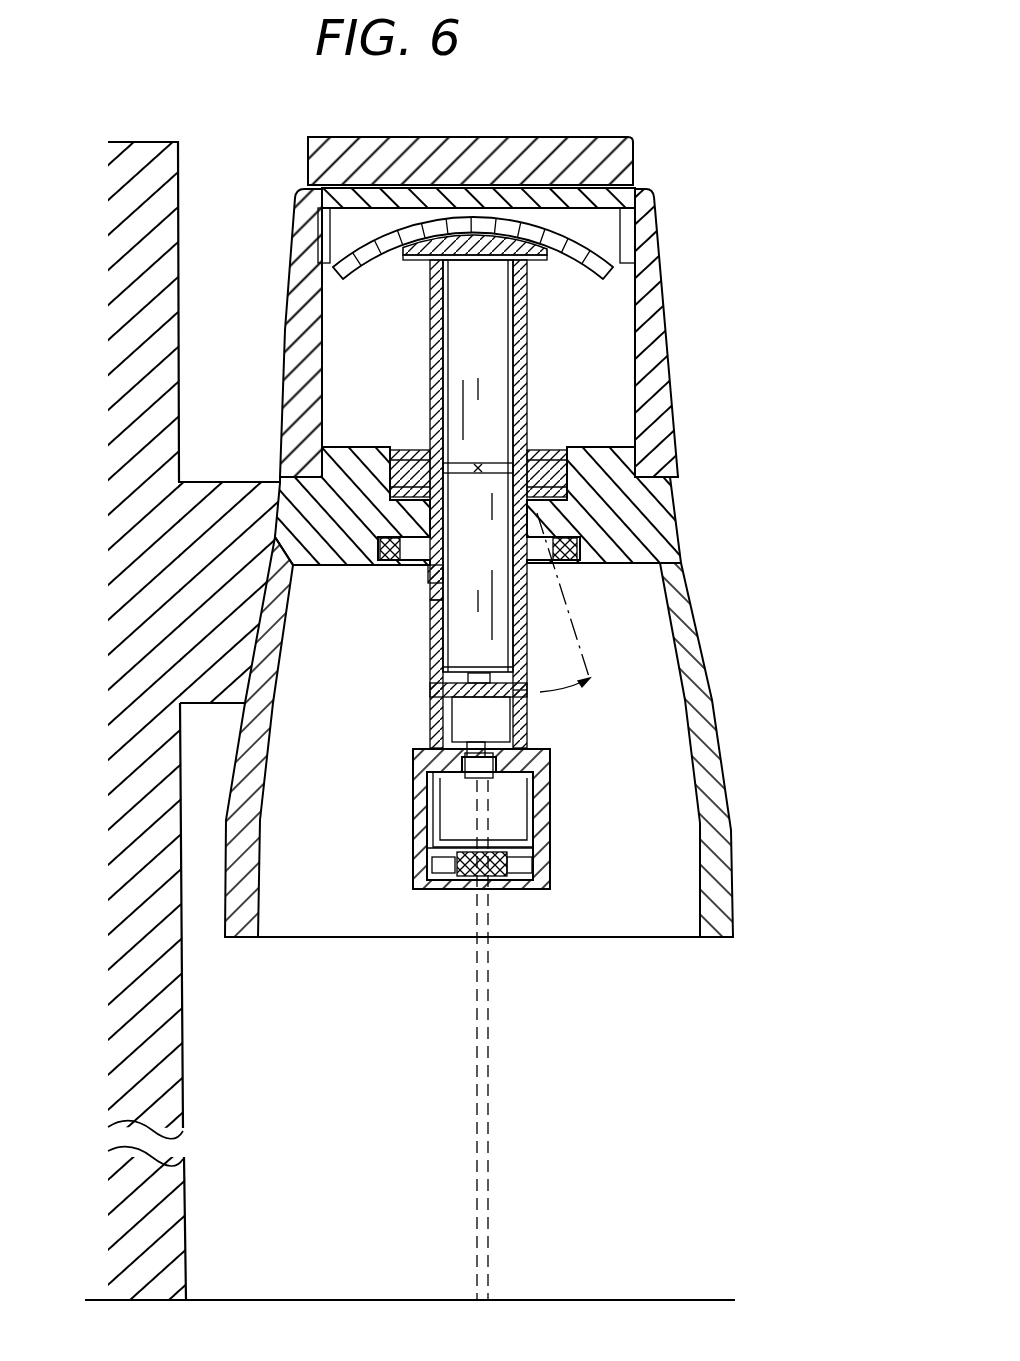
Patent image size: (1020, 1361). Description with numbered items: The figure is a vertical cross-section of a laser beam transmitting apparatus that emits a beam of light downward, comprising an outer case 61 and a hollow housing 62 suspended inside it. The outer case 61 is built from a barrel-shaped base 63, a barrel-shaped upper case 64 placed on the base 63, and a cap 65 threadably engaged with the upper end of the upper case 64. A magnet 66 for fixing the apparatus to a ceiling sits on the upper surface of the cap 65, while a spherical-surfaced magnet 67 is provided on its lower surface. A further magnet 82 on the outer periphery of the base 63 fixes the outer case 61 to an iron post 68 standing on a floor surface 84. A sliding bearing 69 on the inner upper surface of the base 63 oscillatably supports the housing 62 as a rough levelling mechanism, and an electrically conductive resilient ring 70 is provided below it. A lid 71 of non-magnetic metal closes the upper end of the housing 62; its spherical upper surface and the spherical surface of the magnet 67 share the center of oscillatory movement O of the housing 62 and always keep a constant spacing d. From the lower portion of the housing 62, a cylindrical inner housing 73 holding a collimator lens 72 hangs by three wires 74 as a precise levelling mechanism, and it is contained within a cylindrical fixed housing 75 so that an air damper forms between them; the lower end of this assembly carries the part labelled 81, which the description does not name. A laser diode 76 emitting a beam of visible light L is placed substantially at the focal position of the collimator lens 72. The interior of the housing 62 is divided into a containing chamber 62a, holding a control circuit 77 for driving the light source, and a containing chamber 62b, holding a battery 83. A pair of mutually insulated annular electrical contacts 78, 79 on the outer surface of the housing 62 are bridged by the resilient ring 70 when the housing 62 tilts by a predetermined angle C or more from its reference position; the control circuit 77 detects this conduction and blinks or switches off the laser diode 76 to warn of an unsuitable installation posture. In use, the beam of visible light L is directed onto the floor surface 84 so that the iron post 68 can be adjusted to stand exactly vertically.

The outer case 61 is at (688, 427).
The hollow housing 62 is at (533, 413).
The containing chamber 62a is at (453, 733).
The containing chamber 62b is at (428, 637).
The barrel-shaped base 63 is at (714, 882).
The barrel-shaped upper case 64 is at (648, 318).
The cap 65 is at (640, 193).
The magnet 66 is at (610, 148).
The spherical-surfaced magnet 67 is at (608, 236).
The iron post 68 is at (158, 152).
The sliding bearing 69 is at (536, 455).
The electrically conductive resilient ring 70 is at (562, 566).
The lid 71 is at (482, 240).
The collimator lens 72 is at (492, 892).
The cylindrical inner housing 73 is at (548, 784).
The wires 74 is at (482, 768).
The cylindrical fixed housing 75 is at (550, 840).
The laser diode 76 is at (492, 712).
The control circuit 77 is at (532, 694).
The annular electrical contact 78 is at (426, 566).
The annular electrical contact 79 is at (430, 590).
The housing bottom 81 is at (440, 892).
The magnet 82 is at (224, 503).
The battery 83 is at (496, 346).
The floor surface 84 is at (666, 1300).
The center of oscillatory movement O is at (478, 465).
The predetermined angle C is at (598, 690).
The beam of visible light L is at (492, 1108).
The spacing d is at (638, 297).